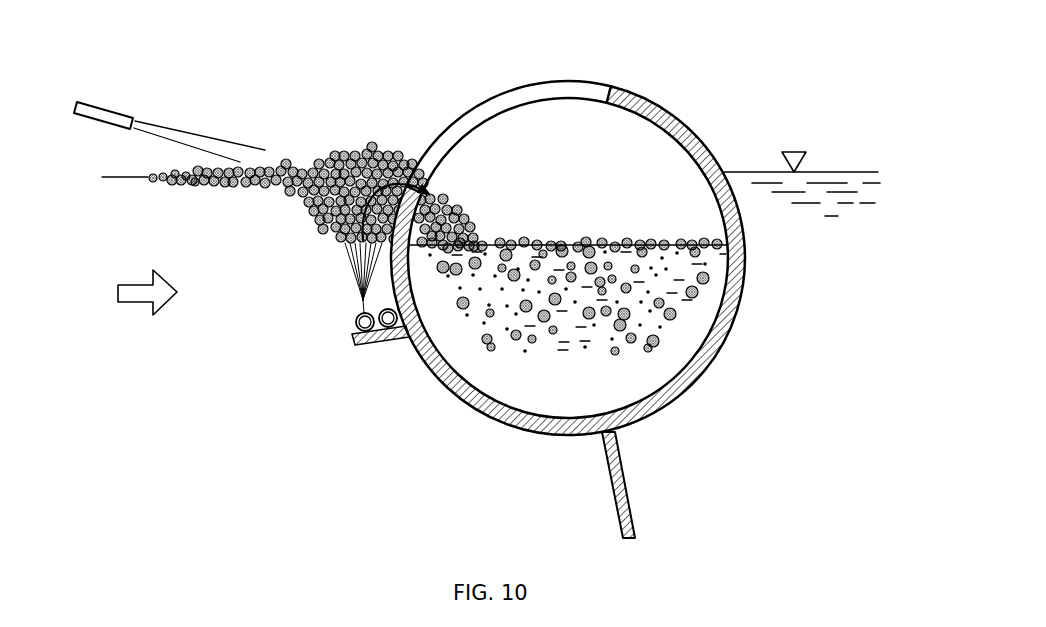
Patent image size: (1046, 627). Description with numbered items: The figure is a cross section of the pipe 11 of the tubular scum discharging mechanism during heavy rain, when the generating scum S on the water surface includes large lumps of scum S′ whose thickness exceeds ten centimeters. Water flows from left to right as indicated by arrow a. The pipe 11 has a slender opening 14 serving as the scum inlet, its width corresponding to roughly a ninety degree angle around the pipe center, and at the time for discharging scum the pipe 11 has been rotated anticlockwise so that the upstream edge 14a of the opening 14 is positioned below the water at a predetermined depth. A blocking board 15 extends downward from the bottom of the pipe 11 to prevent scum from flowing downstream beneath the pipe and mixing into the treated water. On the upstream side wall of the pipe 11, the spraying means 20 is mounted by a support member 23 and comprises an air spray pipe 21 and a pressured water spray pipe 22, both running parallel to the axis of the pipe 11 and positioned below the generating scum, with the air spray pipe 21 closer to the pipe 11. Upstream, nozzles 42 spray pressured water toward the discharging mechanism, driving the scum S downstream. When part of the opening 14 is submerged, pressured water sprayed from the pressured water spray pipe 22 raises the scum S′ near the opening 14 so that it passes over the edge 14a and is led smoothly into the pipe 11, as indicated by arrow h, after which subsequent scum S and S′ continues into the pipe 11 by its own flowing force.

The pipe 11 is at (662, 108).
The opening 14 is at (503, 105).
The edge (rim) of the opening 14a is at (445, 208).
The blocking board 15 is at (625, 482).
The spraying means 20 is at (339, 329).
The air spray pipe 21 is at (378, 312).
The pressured water spray pipe 22 is at (357, 320).
The support member 23 is at (349, 346).
The nozzle 42 is at (104, 114).
The scum S is at (231, 160).
The large lump of scum S′ is at (360, 148).
The arrow indicating scum path h is at (402, 160).
The arrow indicating water flow direction a is at (145, 288).